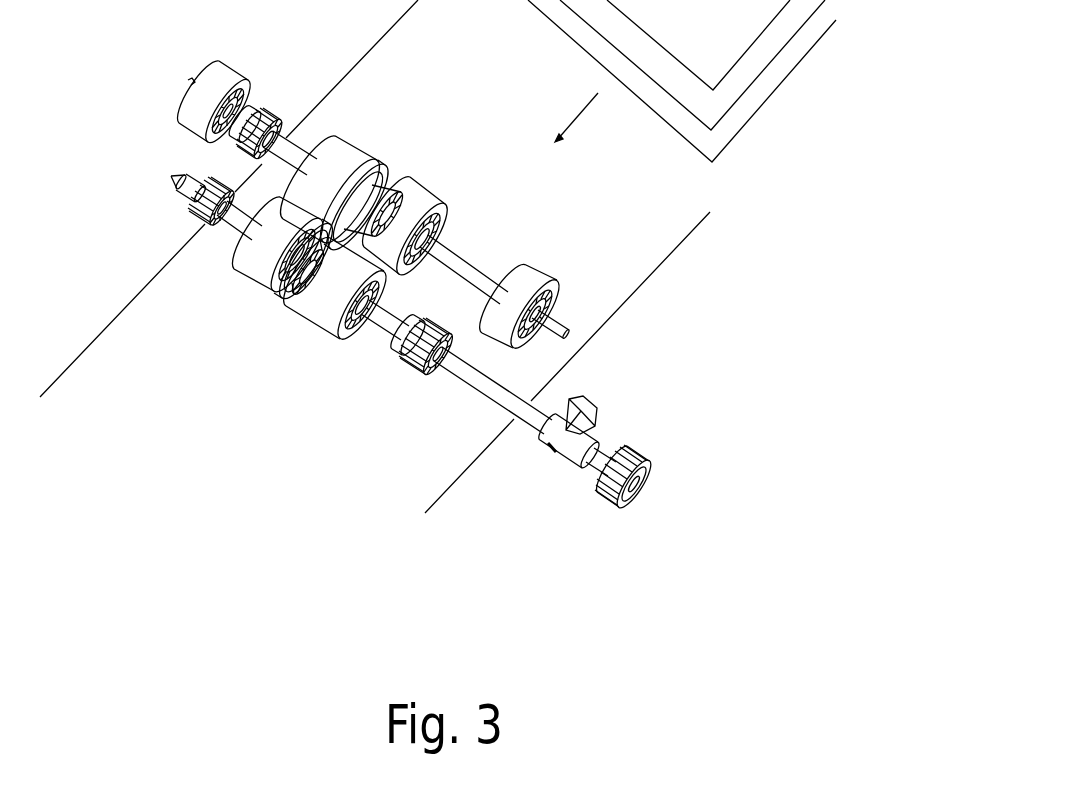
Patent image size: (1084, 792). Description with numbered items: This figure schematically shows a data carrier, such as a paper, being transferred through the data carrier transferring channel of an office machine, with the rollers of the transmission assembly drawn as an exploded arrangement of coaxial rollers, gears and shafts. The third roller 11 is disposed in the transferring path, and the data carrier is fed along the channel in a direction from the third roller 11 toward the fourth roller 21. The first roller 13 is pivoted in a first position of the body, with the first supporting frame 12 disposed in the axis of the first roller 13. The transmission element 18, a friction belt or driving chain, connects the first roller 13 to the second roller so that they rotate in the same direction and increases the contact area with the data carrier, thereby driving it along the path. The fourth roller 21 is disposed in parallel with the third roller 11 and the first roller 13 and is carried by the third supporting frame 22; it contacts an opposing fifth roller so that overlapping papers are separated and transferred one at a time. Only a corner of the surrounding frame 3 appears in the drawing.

The frame 3 is at (728, 140).
The third roller 11 is at (348, 142).
The first supporting frame 12 is at (463, 258).
The first roller 13 is at (393, 169).
The transmission element 18 is at (272, 212).
The fourth roller 21 is at (243, 267).
The third supporting frame 22 is at (473, 392).